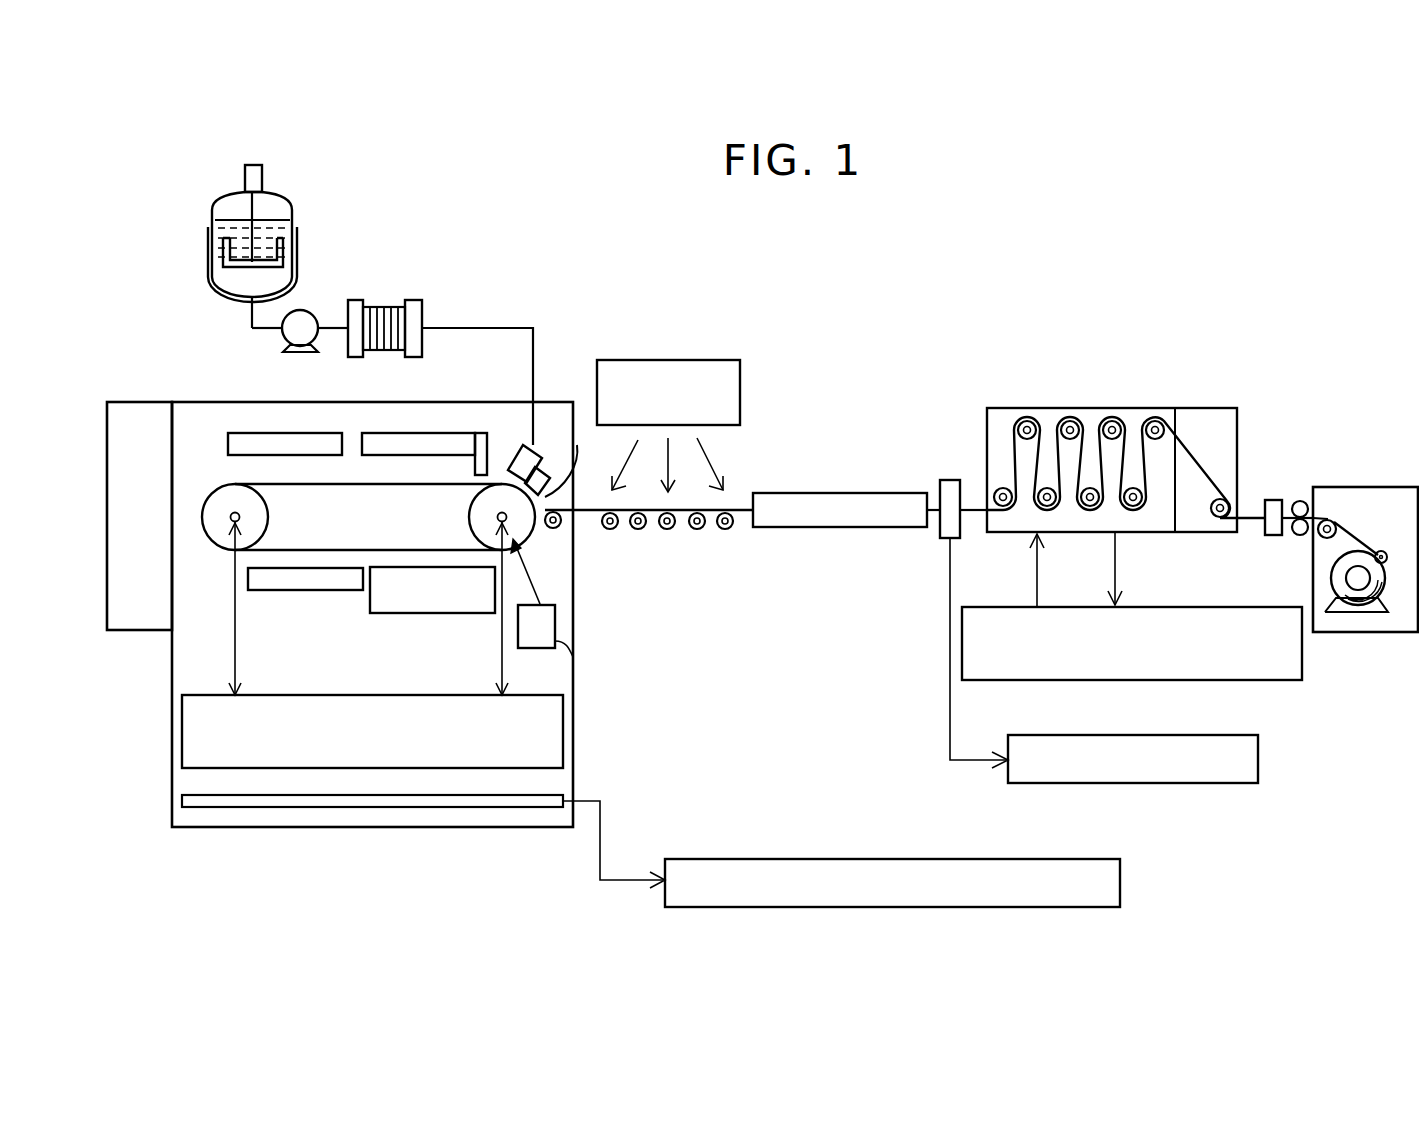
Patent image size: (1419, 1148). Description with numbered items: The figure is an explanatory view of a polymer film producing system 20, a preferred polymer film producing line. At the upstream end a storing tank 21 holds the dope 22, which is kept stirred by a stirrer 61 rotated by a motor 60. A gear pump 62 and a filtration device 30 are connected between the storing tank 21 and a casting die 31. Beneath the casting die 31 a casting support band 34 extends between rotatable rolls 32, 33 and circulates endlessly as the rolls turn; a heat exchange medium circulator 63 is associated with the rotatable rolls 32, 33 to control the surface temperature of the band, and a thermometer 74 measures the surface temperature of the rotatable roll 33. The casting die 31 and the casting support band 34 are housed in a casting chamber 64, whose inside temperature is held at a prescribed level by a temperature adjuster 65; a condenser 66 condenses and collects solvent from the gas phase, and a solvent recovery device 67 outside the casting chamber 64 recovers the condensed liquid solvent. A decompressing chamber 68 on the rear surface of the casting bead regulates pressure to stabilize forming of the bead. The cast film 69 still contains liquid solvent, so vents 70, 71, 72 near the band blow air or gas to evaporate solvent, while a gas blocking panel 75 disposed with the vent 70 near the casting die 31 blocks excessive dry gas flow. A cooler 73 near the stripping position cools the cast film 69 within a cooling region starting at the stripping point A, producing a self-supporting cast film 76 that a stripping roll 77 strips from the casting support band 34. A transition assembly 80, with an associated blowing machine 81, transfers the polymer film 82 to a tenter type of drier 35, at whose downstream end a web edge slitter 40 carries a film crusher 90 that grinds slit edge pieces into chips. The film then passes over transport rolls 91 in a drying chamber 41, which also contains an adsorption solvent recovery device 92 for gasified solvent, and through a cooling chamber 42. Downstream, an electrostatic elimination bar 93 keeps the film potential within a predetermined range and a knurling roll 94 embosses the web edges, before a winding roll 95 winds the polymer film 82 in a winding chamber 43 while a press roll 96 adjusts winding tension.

The polymer film producing system 20 is at (852, 300).
The storing tank 21 is at (228, 193).
The dope 22 is at (263, 278).
The filtration device 30 is at (413, 305).
The casting die 31 is at (522, 446).
The rotatable roll 32 is at (220, 537).
The rotatable roll 33 is at (478, 517).
The casting support band 34 is at (584, 445).
The tenter type of drier 35 is at (842, 493).
The web edge slitter 40 is at (950, 480).
The drying chamber 41 is at (1152, 408).
The cooling chamber 42 is at (1205, 408).
The winding chamber 43 is at (1368, 487).
The motor 60 is at (255, 162).
The stirrer 61 is at (235, 264).
The gear pump 62 is at (302, 333).
The heat exchange medium circulator 63 is at (182, 730).
The casting chamber 64 is at (573, 705).
The temperature adjuster 65 is at (147, 400).
The condenser 66 is at (355, 803).
The solvent recovery device 67 is at (875, 858).
The decompressing chamber 68 is at (542, 470).
The cast film 69 is at (345, 480).
The vent 70 is at (415, 440).
The vent 71 is at (280, 440).
The vent 72 is at (317, 587).
The cooler 73 is at (430, 615).
The thermometer 74 is at (575, 658).
The gas blocking panel 75 is at (479, 437).
The self-supporting cast film 76 is at (562, 530).
The stripping roll 77 is at (557, 541).
The transition assembly 80 is at (732, 544).
The blowing machine 81 is at (668, 358).
The polymer film 82 is at (935, 500).
The film crusher 90 is at (1258, 760).
The transport rolls 91 is at (1027, 408).
The adsorption solvent recovery device 92 is at (1157, 607).
The electrostatic elimination bar 93 is at (1272, 500).
The knurling roll 94 is at (1300, 500).
The winding roll 95 is at (1355, 577).
The press roll 96 is at (1383, 551).
The stripping point A is at (540, 541).